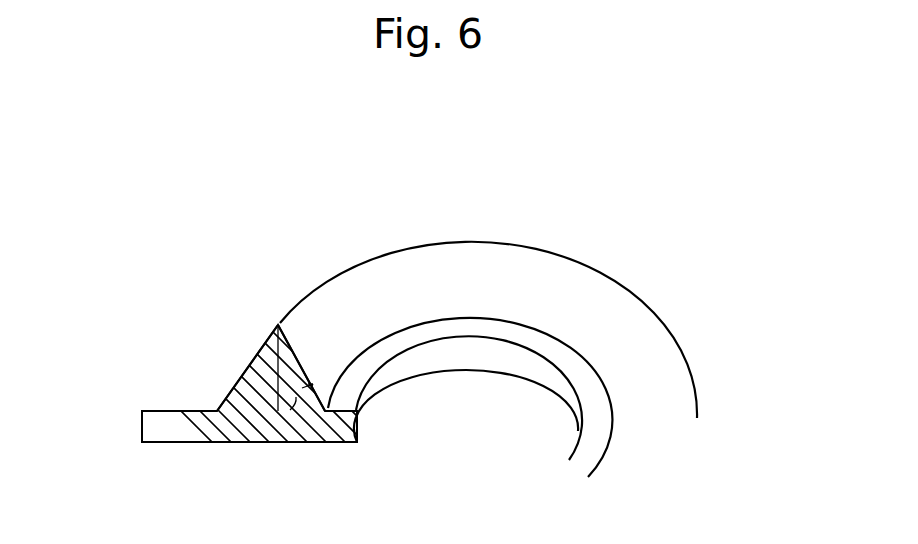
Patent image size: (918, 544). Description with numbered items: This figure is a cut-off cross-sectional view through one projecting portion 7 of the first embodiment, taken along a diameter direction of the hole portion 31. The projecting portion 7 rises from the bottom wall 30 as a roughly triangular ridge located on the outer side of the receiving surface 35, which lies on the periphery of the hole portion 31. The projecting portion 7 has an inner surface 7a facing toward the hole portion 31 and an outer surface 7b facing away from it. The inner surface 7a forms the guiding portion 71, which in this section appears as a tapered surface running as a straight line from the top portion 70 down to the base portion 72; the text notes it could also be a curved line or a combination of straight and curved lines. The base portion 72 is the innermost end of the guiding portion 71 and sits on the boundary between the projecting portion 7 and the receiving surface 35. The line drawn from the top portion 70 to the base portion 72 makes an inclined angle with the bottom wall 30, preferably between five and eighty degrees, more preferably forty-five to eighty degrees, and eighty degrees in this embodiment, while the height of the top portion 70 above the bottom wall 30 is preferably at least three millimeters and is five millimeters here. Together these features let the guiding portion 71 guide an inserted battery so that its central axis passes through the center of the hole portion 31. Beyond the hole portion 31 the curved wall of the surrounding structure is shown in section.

The projecting portion 7 is at (692, 363).
The inner surface 7a is at (303, 363).
The outer surface 7b is at (238, 380).
The top portion 70 is at (280, 323).
The guiding portion 71 is at (538, 280).
The base portion 72 is at (363, 352).
The bottom wall 30 is at (178, 408).
The hole portion 31 is at (533, 373).
The receiving surface 35 is at (348, 387).